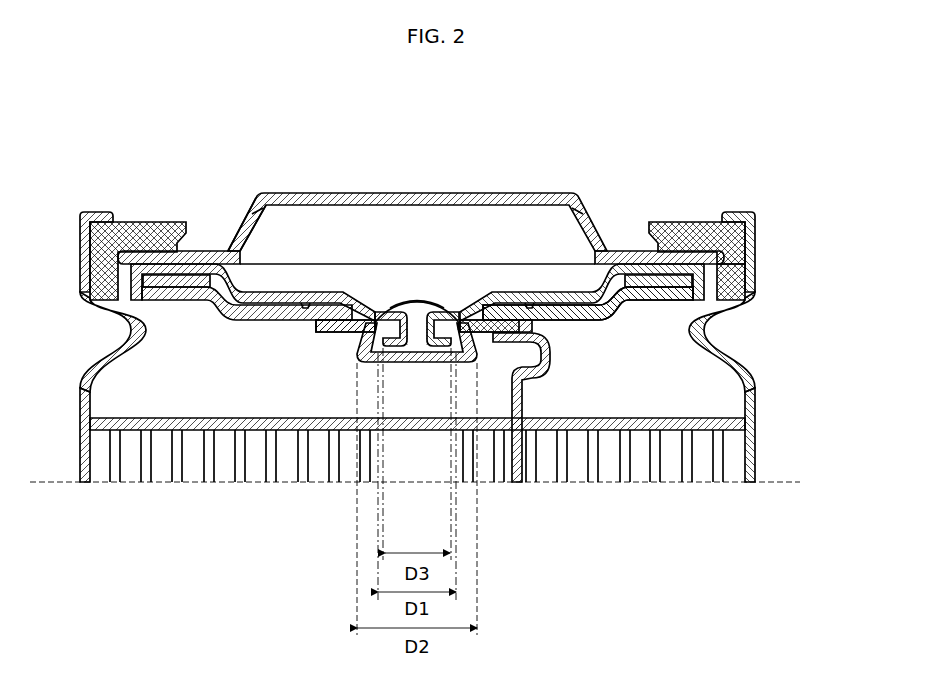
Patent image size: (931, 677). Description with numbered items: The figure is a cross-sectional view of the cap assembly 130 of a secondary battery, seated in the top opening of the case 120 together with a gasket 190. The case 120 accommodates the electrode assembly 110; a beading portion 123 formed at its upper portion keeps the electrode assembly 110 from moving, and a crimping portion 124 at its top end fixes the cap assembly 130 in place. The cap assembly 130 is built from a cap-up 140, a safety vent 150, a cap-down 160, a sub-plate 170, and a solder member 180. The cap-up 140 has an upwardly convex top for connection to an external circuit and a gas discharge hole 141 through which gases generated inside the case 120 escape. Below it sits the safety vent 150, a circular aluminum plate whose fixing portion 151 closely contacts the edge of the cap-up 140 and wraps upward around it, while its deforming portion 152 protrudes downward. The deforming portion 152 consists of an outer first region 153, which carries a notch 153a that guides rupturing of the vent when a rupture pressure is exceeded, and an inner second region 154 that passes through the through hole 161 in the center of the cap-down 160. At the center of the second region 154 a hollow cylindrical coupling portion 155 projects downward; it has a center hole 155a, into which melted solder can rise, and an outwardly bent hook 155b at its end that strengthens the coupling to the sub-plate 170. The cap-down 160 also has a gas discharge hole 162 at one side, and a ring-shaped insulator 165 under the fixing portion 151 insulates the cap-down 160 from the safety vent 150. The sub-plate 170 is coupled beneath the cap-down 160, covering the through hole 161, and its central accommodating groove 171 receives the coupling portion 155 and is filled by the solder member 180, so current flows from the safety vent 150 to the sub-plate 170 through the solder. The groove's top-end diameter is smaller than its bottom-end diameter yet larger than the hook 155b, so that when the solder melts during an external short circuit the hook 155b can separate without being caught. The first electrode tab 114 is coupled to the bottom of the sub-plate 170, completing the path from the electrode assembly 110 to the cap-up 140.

The electrode assembly 110 is at (757, 463).
The first electrode tab 114 is at (755, 386).
The case 120 is at (750, 428).
The beading portion 123 is at (706, 331).
The crimping portion 124 is at (756, 243).
The cap assembly 130 is at (205, 160).
The cap-up 140 is at (437, 193).
The gas discharge hole 141 is at (238, 236).
The safety vent 150 is at (175, 590).
The fixing portion 151 is at (187, 276).
The deforming portion 152 is at (238, 547).
The first region 153 is at (257, 276).
The notch 153a is at (529, 302).
The second region 154 is at (293, 302).
The coupling portion 155 is at (414, 340).
The center hole 155a is at (450, 345).
The hook 155b is at (520, 380).
The cap-down 160 is at (590, 290).
The through hole 161 is at (470, 312).
The gas discharge hole 162 is at (260, 208).
The insulator 165 is at (668, 262).
The sub-plate 170 is at (322, 318).
The accommodating groove 171 is at (418, 300).
The solder member 180 is at (392, 316).
The gasket 190 is at (736, 289).